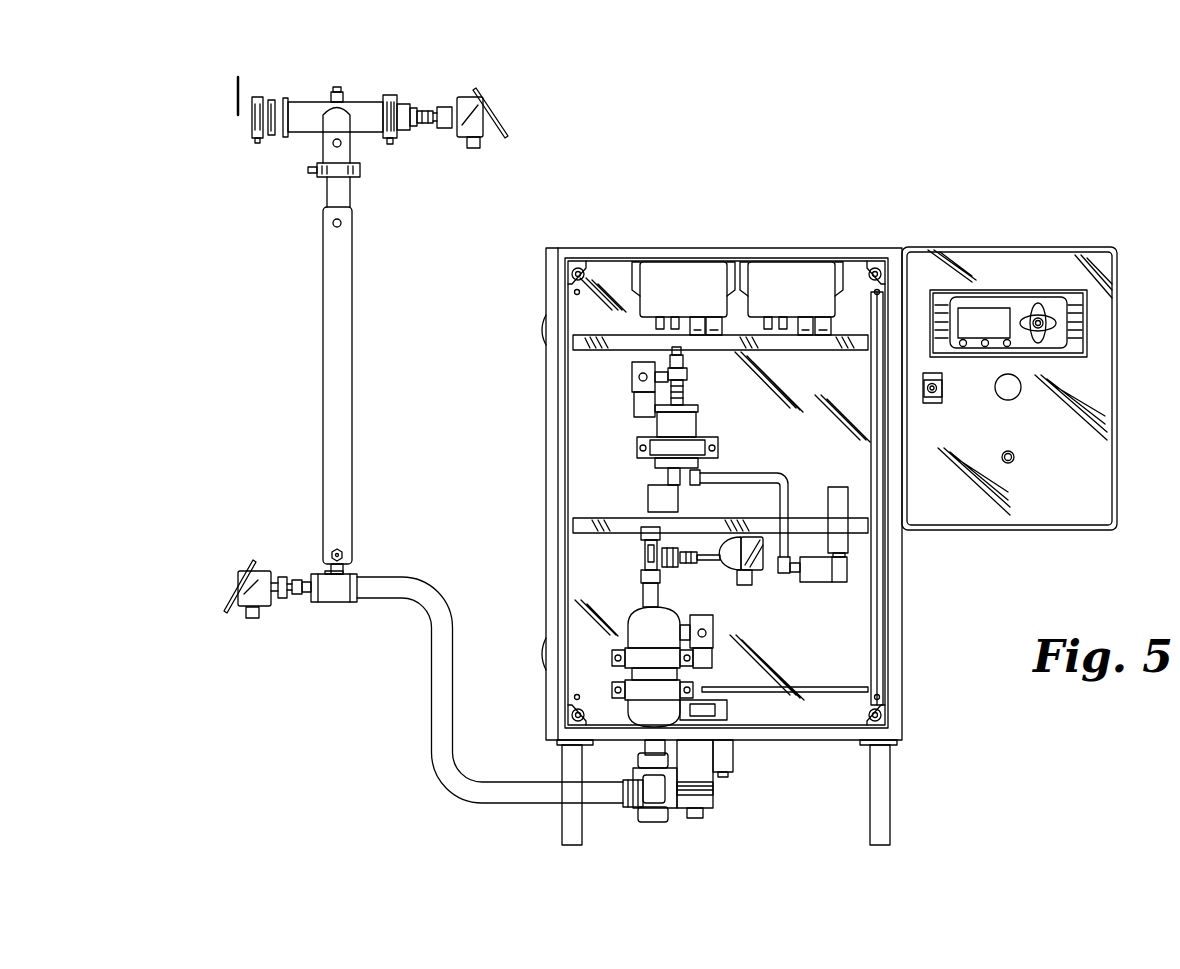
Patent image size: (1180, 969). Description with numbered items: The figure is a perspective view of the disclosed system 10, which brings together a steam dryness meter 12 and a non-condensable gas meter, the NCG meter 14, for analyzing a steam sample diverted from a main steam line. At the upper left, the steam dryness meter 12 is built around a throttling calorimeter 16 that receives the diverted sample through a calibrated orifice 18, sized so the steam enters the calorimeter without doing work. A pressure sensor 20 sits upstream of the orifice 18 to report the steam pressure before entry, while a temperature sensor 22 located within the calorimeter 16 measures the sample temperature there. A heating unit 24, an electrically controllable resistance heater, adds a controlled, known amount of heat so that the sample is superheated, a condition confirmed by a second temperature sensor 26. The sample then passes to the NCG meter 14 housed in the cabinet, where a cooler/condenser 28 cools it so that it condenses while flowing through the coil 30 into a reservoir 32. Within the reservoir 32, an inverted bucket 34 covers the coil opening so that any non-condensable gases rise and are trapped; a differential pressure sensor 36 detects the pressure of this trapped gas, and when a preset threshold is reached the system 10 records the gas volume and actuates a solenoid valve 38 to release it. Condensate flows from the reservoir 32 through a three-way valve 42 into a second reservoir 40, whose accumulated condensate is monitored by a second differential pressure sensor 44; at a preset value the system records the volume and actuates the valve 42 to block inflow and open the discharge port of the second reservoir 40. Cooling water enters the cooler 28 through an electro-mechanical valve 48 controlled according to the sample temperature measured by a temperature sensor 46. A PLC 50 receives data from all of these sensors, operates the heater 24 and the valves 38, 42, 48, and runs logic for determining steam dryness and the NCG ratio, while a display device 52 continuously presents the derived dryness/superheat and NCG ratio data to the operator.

The system 10 is at (647, 163).
The steam dryness meter 12 is at (386, 345).
The NCG meter 14 is at (524, 469).
The throttling calorimeter 16 is at (350, 117).
The calibrated orifice 18 is at (282, 132).
The pressure sensor 20 is at (237, 98).
The temperature sensor 22 is at (475, 117).
The heating unit 24 is at (347, 223).
The second temperature sensor 26 is at (255, 586).
The cooler/condenser 28 is at (648, 637).
The coil 30 is at (707, 480).
The reservoir 32 is at (700, 428).
The inverted bucket 34 is at (675, 427).
The differential pressure sensor 36 is at (683, 298).
The solenoid valve 38 is at (632, 380).
The second reservoir 40 is at (840, 522).
The three-way valve 42 is at (825, 582).
The second differential pressure sensor 44 is at (791, 298).
The temperature sensor 46 is at (742, 560).
The electro-mechanical valve 48 is at (713, 637).
The PLC 50 is at (1033, 290).
The display device 52 is at (983, 308).